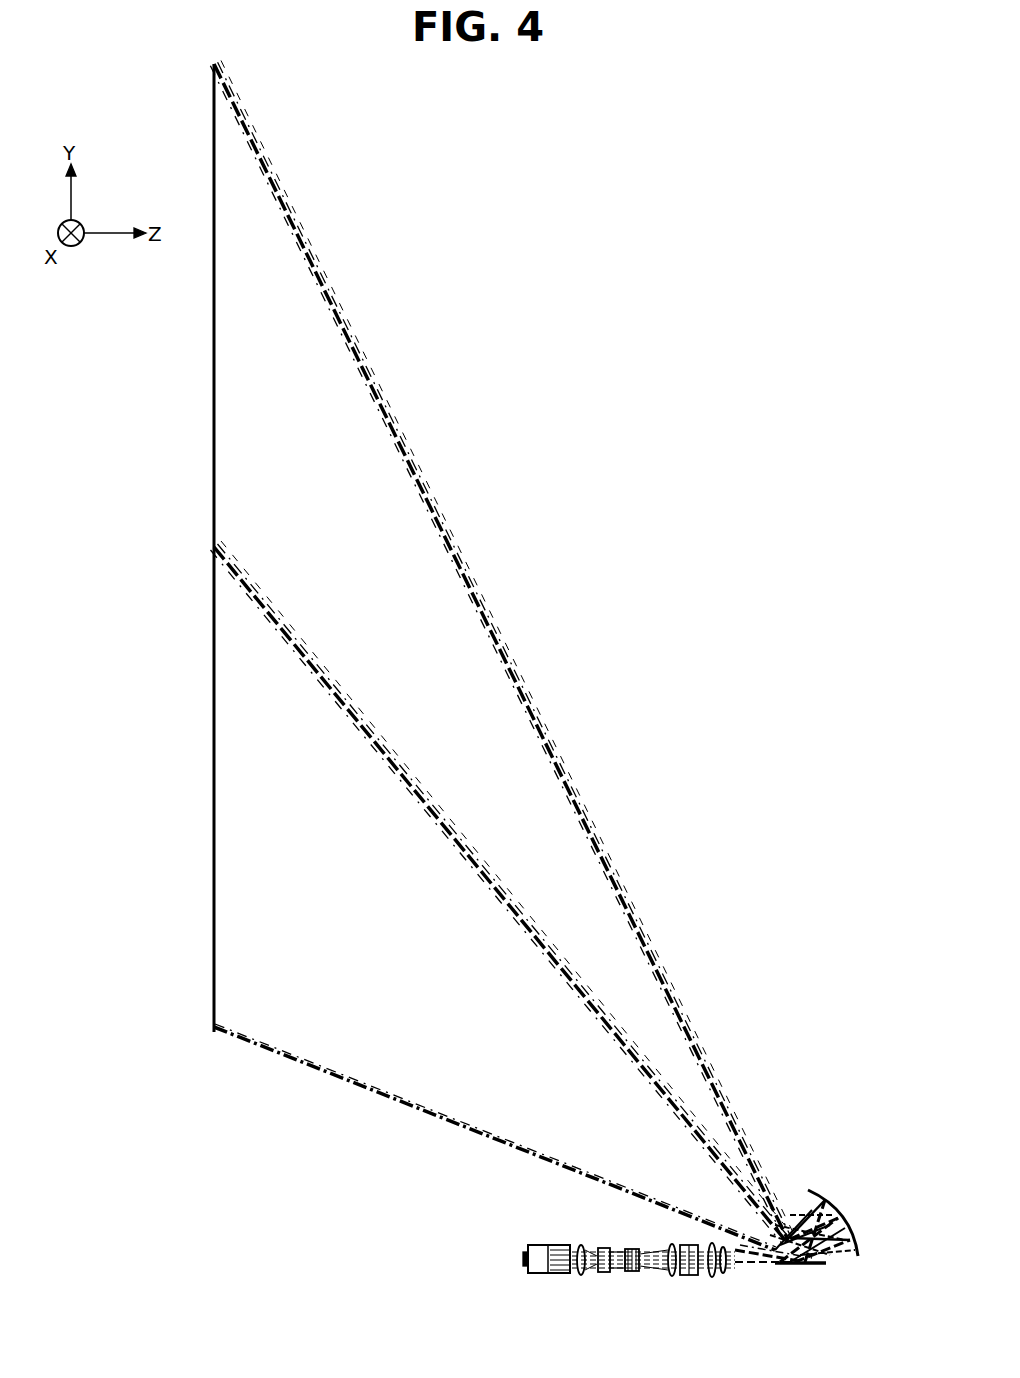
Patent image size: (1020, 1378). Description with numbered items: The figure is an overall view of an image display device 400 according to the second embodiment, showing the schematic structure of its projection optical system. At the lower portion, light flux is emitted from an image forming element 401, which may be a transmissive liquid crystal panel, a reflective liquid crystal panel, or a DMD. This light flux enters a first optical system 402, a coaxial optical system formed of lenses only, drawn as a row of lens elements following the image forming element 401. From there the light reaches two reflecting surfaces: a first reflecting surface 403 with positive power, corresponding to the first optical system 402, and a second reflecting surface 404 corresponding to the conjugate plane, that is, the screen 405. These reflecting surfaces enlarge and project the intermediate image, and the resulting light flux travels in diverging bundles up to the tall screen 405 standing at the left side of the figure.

The image display device 400 is at (730, 896).
The image forming element 401 is at (524, 1259).
The first optical system 402 is at (729, 1283).
The first reflecting surface 403 is at (834, 1223).
The second reflecting surface 404 is at (820, 1270).
The screen 405 is at (213, 712).